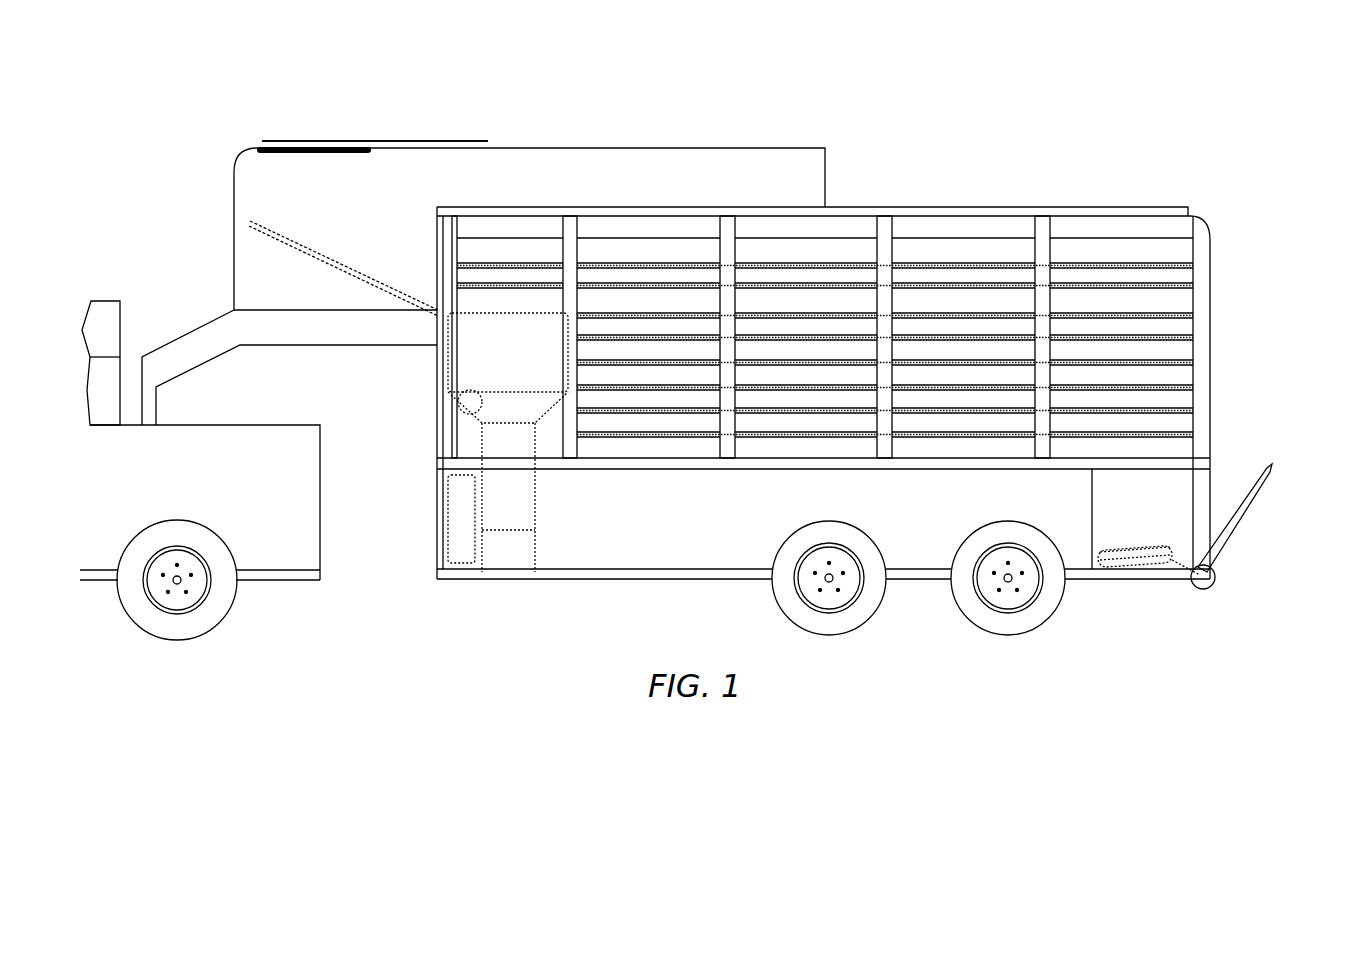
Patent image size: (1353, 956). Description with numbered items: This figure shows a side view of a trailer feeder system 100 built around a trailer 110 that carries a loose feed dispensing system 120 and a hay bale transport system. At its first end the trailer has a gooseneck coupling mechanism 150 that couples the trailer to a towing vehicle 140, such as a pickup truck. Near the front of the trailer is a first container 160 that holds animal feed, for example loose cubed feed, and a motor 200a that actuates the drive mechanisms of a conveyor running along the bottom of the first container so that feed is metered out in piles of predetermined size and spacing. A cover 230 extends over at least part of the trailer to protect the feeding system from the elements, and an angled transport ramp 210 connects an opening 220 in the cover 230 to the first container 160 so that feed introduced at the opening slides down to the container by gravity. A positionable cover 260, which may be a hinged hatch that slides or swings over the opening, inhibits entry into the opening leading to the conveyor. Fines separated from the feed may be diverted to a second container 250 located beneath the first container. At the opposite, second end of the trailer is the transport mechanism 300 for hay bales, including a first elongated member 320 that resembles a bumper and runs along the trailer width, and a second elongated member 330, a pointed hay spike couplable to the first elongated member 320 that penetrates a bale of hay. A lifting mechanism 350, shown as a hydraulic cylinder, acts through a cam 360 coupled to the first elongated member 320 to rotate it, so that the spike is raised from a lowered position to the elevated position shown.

The trailer feeder system 100 is at (1033, 134).
The trailer 110 is at (861, 207).
The loose feed dispensing system 120 is at (437, 370).
The vehicle 140 is at (103, 300).
The coupling mechanism 150 is at (210, 368).
The first container 160 is at (508, 442).
The motor 200a is at (462, 404).
The transport ramp 210 is at (320, 252).
The opening 220 is at (259, 146).
The cover 230 is at (640, 148).
The second container 250 is at (447, 535).
The positionable cover 260 is at (383, 140).
The transport mechanism 300 is at (1236, 567).
The first elongated member 320 is at (1212, 590).
The second elongated member 330 is at (1262, 500).
The lifting mechanism 350 is at (1132, 546).
The cam 360 is at (1176, 562).